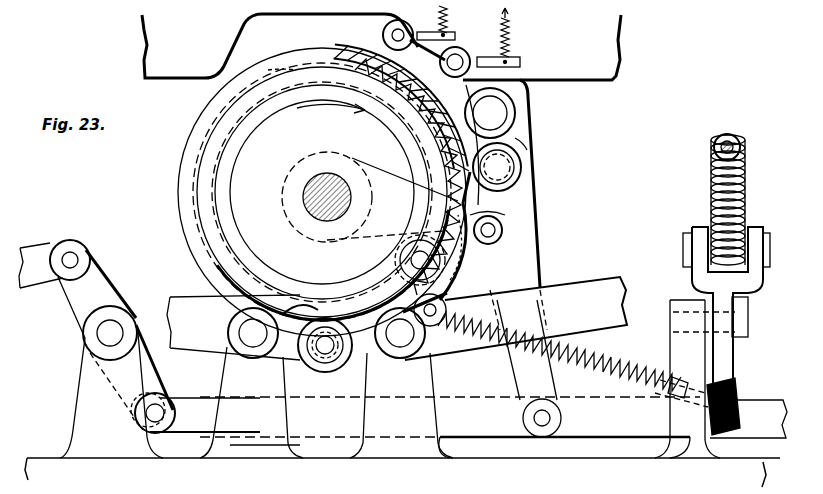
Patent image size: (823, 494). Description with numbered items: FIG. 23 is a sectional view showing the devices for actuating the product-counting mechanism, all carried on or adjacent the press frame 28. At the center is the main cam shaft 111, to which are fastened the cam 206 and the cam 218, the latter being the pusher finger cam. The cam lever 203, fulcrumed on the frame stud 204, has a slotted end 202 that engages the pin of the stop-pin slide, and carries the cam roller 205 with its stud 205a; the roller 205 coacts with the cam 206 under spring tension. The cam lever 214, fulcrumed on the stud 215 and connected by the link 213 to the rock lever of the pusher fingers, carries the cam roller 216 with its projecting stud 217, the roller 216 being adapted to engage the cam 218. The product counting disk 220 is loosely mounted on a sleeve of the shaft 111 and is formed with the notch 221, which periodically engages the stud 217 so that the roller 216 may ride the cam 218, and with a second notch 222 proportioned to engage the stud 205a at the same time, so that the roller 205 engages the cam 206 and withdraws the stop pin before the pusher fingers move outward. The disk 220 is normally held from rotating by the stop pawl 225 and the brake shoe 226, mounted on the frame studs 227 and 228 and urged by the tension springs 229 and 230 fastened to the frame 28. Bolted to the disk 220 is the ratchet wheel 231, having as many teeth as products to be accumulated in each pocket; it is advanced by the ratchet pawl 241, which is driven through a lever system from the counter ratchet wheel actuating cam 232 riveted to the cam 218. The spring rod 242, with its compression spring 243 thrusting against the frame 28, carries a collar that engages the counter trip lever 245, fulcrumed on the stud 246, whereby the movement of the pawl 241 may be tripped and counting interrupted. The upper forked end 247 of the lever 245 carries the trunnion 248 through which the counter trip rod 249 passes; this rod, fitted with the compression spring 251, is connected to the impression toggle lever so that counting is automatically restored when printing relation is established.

The press frame 28 is at (618, 70).
The main cam shaft 111 is at (313, 212).
The slotted end 202 is at (159, 349).
The cam lever 203 is at (233, 327).
The frame stud 204 is at (255, 358).
The cam roller 205 is at (312, 405).
The stud 205a is at (330, 362).
The cam 206 is at (337, 212).
The link 213 is at (450, 402).
The cam lever 214 is at (527, 257).
The stud 215 is at (497, 115).
The cam roller 216 is at (527, 143).
The projecting stud 217 is at (517, 167).
The cam 218 is at (192, 179).
The product counting disk 220 is at (443, 283).
The notch 221 is at (505, 215).
The second notch 222 is at (306, 310).
The stop pawl 225 is at (400, 100).
The brake shoe 226 is at (388, 34).
The frame stud 227 is at (459, 58).
The frame stud 228 is at (432, 22).
The tension spring 229 is at (508, 46).
The tension spring 230 is at (448, 20).
The ratchet wheel 231 is at (443, 150).
The counter ratchet wheel actuating cam 232 is at (282, 88).
The ratchet pawl 241 is at (738, 390).
The spring rod 242 is at (602, 360).
The compression spring 243 is at (668, 398).
The counter trip lever 245 is at (735, 360).
The stud 246 is at (749, 320).
The forked end 247 is at (693, 227).
The trunnion 248 is at (685, 247).
The counter trip rod 249 is at (716, 150).
The compression spring 251 is at (748, 176).